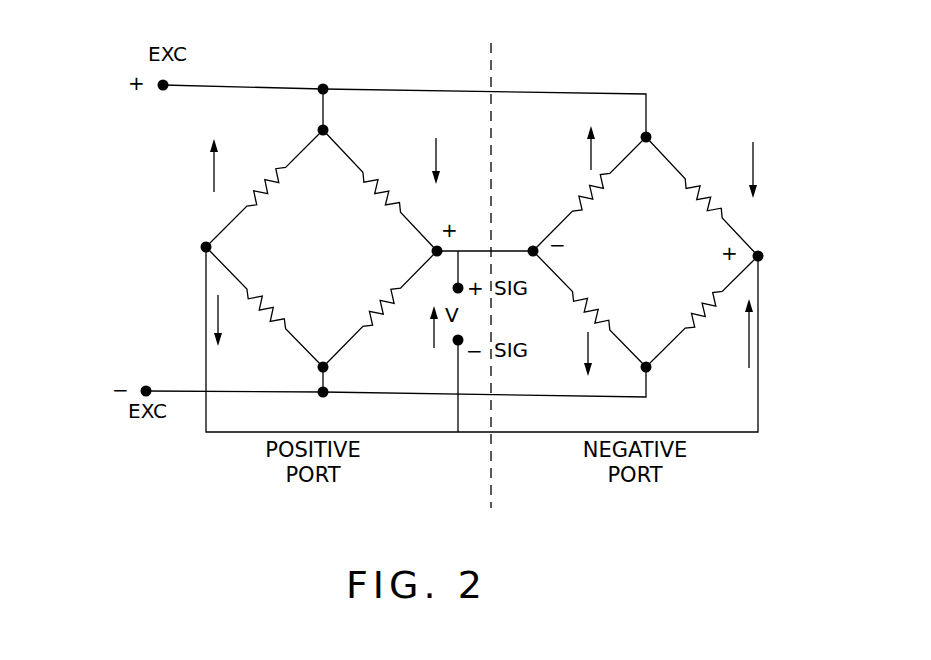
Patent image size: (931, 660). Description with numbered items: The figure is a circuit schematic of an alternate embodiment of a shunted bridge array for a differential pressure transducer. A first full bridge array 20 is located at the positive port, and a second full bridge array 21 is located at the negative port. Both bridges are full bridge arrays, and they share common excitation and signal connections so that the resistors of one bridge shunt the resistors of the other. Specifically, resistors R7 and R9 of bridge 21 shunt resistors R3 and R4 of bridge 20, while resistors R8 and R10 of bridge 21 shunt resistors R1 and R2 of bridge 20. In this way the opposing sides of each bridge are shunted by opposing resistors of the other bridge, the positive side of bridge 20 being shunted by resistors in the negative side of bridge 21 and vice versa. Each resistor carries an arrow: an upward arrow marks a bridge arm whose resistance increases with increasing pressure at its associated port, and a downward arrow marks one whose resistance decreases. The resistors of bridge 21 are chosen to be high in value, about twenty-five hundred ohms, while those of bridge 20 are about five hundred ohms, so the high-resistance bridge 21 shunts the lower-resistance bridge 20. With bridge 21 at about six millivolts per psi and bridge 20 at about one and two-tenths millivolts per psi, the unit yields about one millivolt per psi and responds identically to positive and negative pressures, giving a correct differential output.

The first full bridge array 20 is at (321, 248).
The second bridge array 21 is at (645, 252).
The resistor R1 is at (264, 188).
The resistor R2 is at (264, 307).
The resistor R3 is at (380, 190).
The resistor R4 is at (380, 309).
The resistor R7 is at (589, 194).
The resistor R8 is at (702, 196).
The resistor R9 is at (589, 309).
The resistor R10 is at (702, 311).